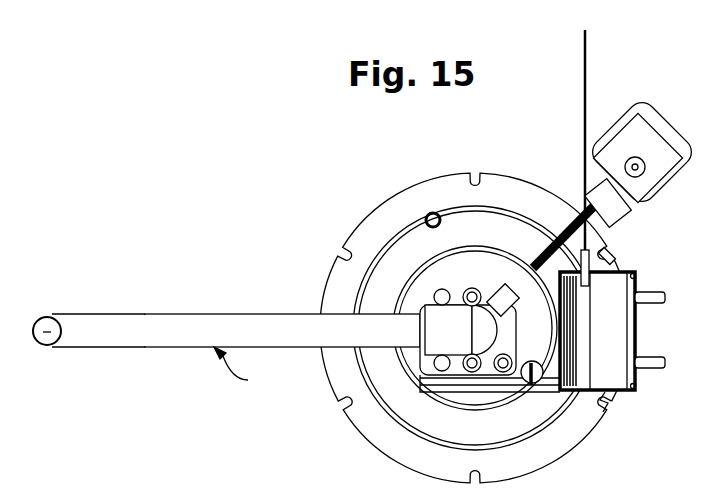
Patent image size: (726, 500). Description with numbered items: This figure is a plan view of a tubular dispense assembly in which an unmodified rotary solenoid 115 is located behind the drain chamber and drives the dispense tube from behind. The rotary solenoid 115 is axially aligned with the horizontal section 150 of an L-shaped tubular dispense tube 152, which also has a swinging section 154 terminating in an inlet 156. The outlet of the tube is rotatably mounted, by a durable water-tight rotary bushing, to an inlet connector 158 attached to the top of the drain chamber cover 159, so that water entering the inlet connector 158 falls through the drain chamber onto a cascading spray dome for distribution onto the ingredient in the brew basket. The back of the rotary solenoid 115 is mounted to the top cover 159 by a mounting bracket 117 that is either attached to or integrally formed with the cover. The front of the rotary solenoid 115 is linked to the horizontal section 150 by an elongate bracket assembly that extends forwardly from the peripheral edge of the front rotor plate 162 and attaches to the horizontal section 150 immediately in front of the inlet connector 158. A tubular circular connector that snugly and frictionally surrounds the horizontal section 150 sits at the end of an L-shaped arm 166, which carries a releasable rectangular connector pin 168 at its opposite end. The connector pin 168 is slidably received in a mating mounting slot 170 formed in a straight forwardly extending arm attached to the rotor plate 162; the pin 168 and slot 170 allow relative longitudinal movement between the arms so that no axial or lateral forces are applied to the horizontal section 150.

The rotary solenoid 115 is at (609, 349).
The mounting bracket 117 is at (650, 316).
The horizontal section 150 is at (188, 323).
The L-shaped tubular dispense tube 152 is at (247, 368).
The swinging section 154 is at (95, 347).
The inlet 156 is at (43, 318).
The inlet connector 158 is at (437, 290).
The drain chamber cover 159 is at (541, 467).
The front rotor plate 162 is at (606, 254).
The L-shaped arm 166 is at (467, 397).
The connector pin 168 is at (545, 425).
The mounting slot 170 is at (614, 392).